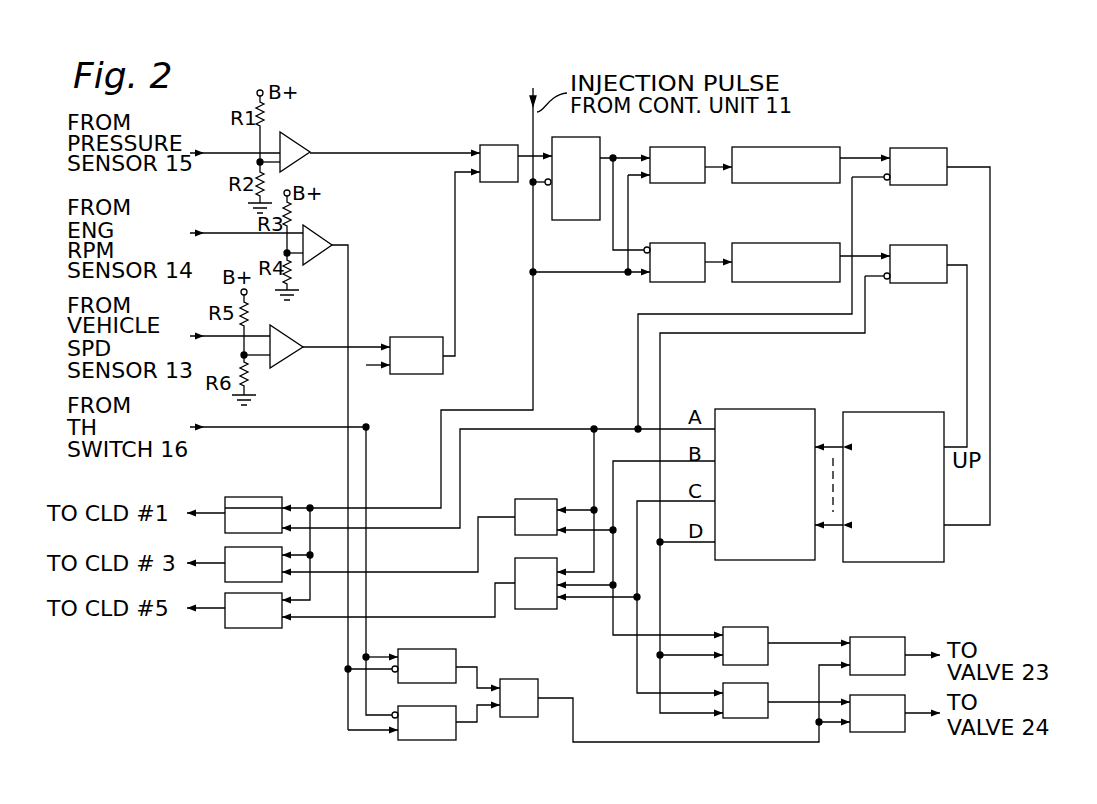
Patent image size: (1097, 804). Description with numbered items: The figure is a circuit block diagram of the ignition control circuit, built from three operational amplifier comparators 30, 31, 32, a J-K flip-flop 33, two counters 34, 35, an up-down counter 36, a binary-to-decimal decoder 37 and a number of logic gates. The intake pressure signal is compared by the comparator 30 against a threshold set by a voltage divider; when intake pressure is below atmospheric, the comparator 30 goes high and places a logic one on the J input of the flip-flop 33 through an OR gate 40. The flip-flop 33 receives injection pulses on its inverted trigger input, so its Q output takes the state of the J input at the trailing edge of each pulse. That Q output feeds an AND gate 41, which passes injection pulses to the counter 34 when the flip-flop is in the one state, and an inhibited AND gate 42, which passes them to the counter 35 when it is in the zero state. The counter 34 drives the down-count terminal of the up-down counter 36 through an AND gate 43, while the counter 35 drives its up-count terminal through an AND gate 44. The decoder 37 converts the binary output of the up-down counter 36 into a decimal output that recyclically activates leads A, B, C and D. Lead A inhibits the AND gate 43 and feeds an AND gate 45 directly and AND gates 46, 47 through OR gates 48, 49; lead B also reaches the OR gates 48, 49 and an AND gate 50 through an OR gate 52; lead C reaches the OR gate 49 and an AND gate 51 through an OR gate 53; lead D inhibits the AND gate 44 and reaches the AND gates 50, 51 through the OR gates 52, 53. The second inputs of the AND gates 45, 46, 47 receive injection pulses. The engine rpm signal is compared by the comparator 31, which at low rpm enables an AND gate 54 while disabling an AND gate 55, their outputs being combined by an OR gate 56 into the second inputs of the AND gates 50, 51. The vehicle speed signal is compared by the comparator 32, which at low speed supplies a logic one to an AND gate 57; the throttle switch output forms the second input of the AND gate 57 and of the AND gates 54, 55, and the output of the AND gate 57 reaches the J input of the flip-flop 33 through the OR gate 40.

The operational amplifier comparator 30 is at (292, 138).
The operational amplifier comparator 31 is at (320, 232).
The operational amplifier comparator 32 is at (292, 328).
The J-K flip-flop 33 is at (573, 220).
The counter 34 is at (795, 147).
The counter 35 is at (795, 243).
The up-down counter 36 is at (900, 412).
The binary-to-decimal decoder 37 is at (770, 409).
The OR gate 40 is at (490, 145).
The AND gate 41 is at (677, 147).
The inhibited AND gate 42 is at (677, 243).
The AND gate 43 is at (930, 148).
The AND gate 44 is at (920, 245).
The AND gate 45 is at (240, 497).
The AND gate 46 is at (225, 547).
The AND gate 47 is at (240, 628).
The OR gate 48 is at (535, 499).
The OR gate 49 is at (540, 609).
The AND gate 50 is at (880, 637).
The AND gate 51 is at (895, 695).
The OR gate 52 is at (750, 627).
The OR gate 53 is at (765, 683).
The AND gate 54 is at (425, 740).
The AND gate 55 is at (430, 649).
The OR gate 56 is at (528, 679).
The AND gate 57 is at (415, 337).